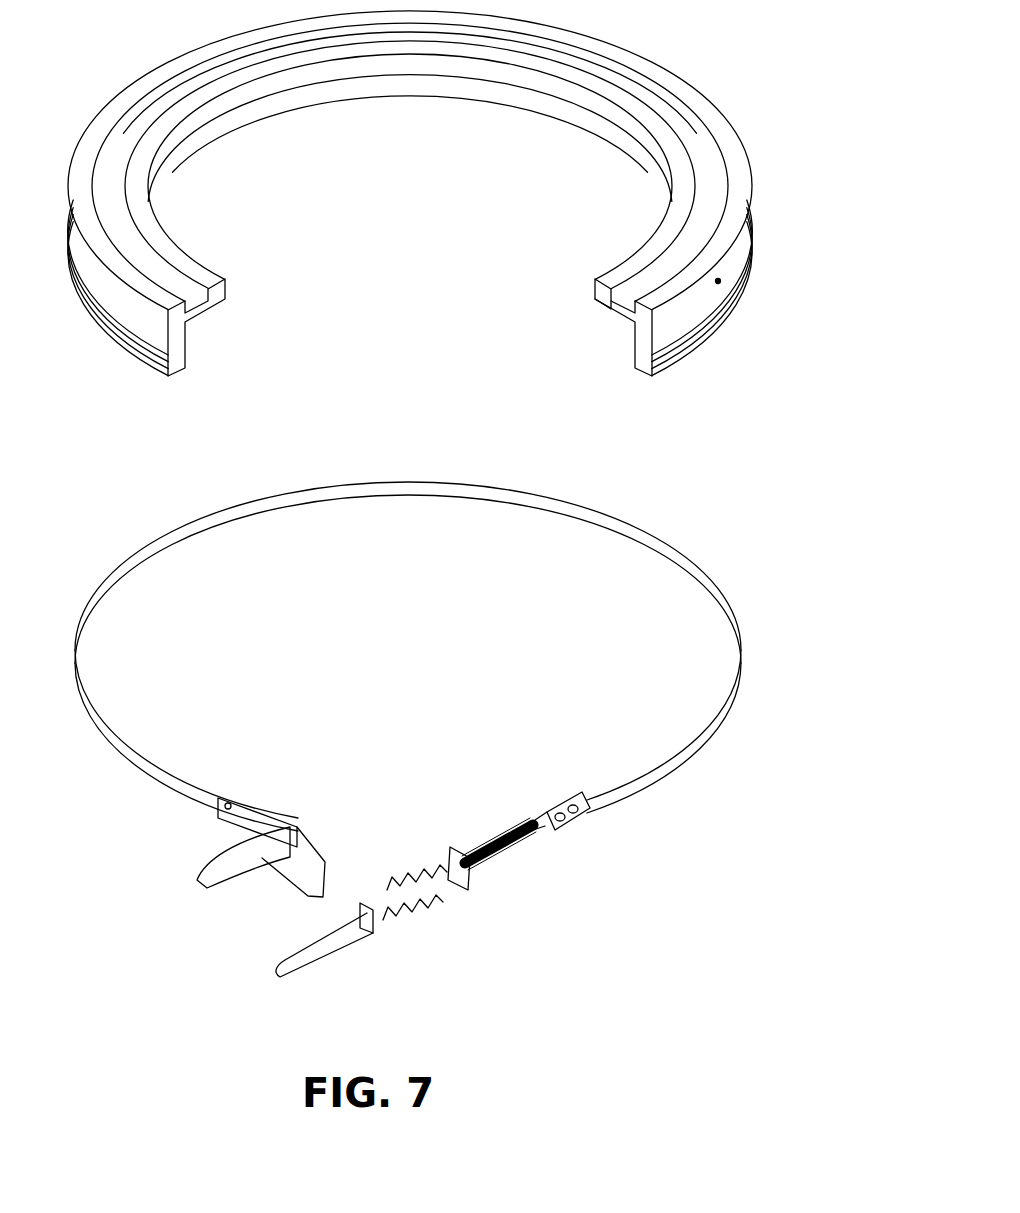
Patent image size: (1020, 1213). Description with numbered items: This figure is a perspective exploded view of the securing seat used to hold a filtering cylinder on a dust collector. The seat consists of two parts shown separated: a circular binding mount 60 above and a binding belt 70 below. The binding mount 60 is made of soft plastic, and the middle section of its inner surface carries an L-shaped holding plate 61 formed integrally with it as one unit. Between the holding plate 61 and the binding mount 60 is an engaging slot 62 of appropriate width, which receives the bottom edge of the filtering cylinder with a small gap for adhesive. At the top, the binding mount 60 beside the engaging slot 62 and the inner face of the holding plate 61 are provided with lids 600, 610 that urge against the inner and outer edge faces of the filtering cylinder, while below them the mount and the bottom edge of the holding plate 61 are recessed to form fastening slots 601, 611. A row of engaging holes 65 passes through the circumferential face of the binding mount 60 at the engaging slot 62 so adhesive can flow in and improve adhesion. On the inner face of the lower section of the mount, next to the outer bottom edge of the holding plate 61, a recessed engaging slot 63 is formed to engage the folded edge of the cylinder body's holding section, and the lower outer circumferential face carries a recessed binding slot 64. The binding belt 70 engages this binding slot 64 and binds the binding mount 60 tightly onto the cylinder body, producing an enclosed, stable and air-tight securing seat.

The binding mount 60 is at (740, 221).
The engaging slot 62 is at (707, 174).
The lid 610 is at (665, 248).
The holding plate 61 is at (592, 296).
The fastening slot 611 is at (598, 313).
The recessed engaging slot 63 is at (640, 332).
The binding slot 64 is at (668, 356).
The fastening slot 601 is at (680, 347).
The engaging hole 65 is at (727, 287).
The lid 600 is at (713, 251).
The binding belt 70 is at (160, 784).